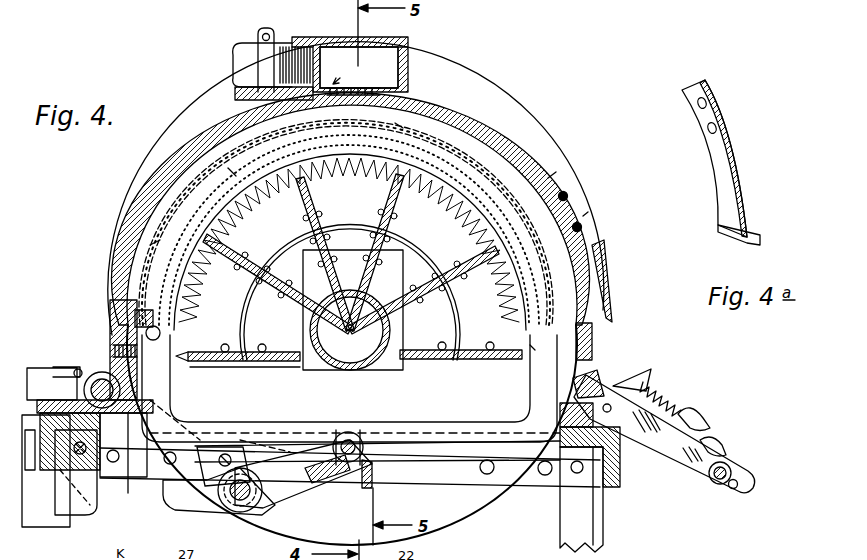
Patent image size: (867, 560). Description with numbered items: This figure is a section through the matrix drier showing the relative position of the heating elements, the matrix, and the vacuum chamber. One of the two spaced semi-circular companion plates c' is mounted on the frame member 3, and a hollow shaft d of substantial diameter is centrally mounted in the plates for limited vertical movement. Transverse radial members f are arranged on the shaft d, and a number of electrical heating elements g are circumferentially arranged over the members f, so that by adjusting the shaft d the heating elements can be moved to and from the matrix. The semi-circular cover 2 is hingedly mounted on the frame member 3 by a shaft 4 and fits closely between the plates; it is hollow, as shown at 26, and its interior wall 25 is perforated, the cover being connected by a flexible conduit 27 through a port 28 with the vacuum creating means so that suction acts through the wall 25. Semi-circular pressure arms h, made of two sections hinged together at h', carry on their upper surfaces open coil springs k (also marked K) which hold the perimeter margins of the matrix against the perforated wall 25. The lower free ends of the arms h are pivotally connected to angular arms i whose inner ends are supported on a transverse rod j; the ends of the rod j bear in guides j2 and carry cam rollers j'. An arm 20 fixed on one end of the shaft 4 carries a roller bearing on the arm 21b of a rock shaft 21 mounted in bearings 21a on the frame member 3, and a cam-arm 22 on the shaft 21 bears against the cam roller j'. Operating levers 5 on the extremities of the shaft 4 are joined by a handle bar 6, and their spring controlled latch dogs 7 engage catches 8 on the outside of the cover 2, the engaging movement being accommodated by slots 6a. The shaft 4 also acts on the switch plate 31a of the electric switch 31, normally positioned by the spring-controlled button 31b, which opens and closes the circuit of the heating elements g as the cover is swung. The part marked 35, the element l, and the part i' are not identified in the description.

In FIG. 4, the cover 2 is at (165, 182).
In FIG. 4, the frame member 3 is at (527, 470).
In FIG. 4, the shaft 4 is at (100, 372).
In FIG. 4, the operating lever 5 is at (672, 452).
In FIG. 4, the handle bar 6 is at (715, 485).
In FIG. 4, the slot 6a is at (735, 490).
In FIG. 4, the latch dog 7 is at (647, 376).
In FIG. 4, the catch 8 is at (610, 302).
In FIG. 4A, the catch 8 is at (752, 228).
In FIG. 4, the arm 20 is at (130, 480).
In FIG. 4, the rock shaft 21 is at (250, 505).
In FIG. 4, the bearing 21a is at (223, 455).
In FIG. 4, the arm 21b is at (190, 505).
In FIG. 4, the cam-arm 22 is at (322, 485).
In FIG. 4, the interior wall 25 is at (142, 262).
In FIG. 4, the hollow 26 is at (478, 134).
In FIG. 4, the flexible conduit 27 is at (245, 47).
In FIG. 4, the port 28 is at (332, 37).
In FIG. 4, the electric switch 31 is at (45, 522).
In FIG. 4, the switch plate 31a is at (66, 390).
In FIG. 4, the spring-controlled button 31b is at (87, 508).
In FIG. 4, the inner wall 35 is at (190, 175).
In FIG. 4, the pressure arm h is at (199, 127).
In FIG. 4, the hinge h' is at (432, 80).
In FIG. 4, the coiled spring k is at (443, 143).
In FIG. 4, the coiled spring K is at (143, 245).
In FIG. 4, the radial member f is at (345, 194).
In FIG. 4, the electrical heating element g is at (194, 340).
In FIG. 4, the hollow shaft d is at (350, 360).
In FIG. 4, the rim l is at (430, 250).
In FIG. 4, the angular arm i is at (351, 393).
In FIG. 4, the frame side i' is at (521, 369).
In FIG. 4, the transverse rod j is at (377, 428).
In FIG. 4, the cam roller j' is at (383, 486).
In FIG. 4, the guide j2 is at (325, 425).
In FIG. 4, the companion plate c' is at (456, 401).